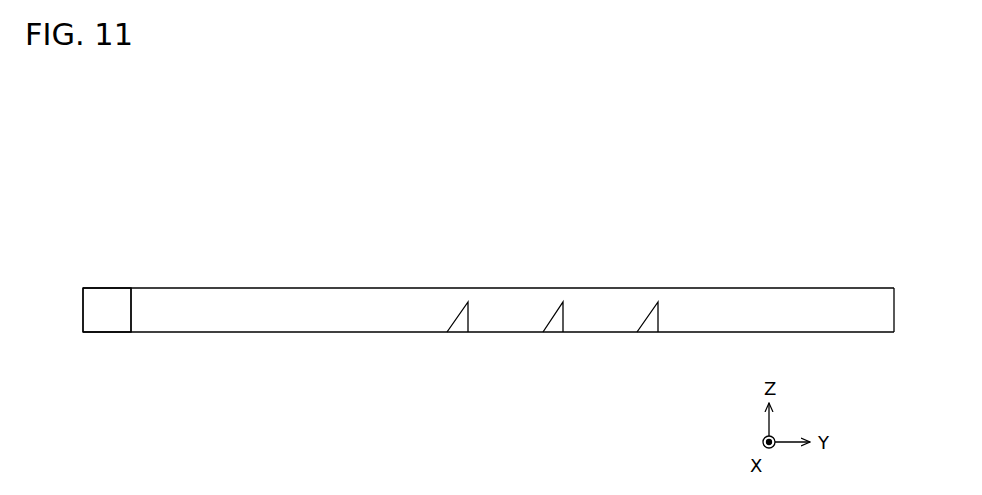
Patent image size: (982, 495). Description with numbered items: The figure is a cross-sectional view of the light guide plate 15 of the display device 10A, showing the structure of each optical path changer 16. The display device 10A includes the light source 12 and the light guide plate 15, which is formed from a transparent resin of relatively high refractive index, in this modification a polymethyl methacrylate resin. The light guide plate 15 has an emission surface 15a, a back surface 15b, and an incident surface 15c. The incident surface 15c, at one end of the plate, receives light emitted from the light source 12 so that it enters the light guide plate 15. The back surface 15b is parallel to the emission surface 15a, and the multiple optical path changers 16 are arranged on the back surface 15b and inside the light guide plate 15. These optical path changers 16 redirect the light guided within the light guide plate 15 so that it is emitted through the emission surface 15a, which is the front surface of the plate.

The display device 10A is at (134, 165).
The light source 12 is at (108, 327).
The light guide plate 15 is at (829, 302).
The emission surface 15a is at (282, 288).
The back surface 15b is at (282, 333).
The incident surface 15c is at (131, 307).
The optical path changer 16 is at (663, 337).